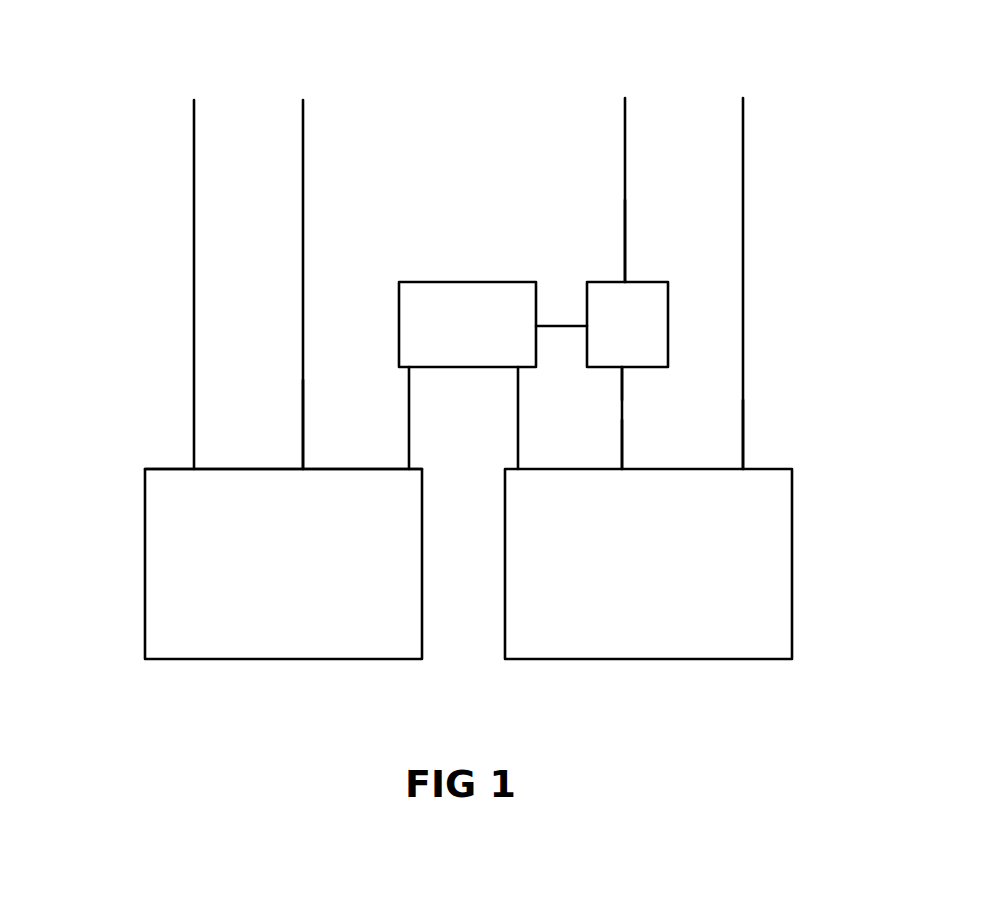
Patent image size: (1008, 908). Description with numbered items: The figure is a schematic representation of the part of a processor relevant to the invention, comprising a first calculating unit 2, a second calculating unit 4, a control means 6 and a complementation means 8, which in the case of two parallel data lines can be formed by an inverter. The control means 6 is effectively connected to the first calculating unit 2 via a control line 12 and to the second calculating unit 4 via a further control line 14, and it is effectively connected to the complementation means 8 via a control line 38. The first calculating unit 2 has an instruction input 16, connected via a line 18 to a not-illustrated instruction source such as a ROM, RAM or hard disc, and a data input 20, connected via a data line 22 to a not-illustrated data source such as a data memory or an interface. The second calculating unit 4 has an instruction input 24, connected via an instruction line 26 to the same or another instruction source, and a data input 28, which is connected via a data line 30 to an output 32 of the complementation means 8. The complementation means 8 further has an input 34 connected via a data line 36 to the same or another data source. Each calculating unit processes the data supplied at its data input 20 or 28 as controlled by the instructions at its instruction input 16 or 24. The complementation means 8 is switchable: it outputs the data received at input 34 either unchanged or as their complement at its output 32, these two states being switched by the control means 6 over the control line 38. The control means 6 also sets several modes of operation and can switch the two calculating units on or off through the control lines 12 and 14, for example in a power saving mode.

The first calculating unit 2 is at (312, 643).
The second calculating unit 4 is at (663, 637).
The control means 6 is at (417, 297).
The complementation means 8 is at (645, 297).
The control line 12 is at (409, 417).
The control line 14 is at (518, 437).
The instruction input 16 is at (192, 469).
The line 18 is at (194, 242).
The data input 20 is at (302, 467).
The data line 22 is at (303, 309).
The instruction input 24 is at (743, 463).
The instruction line 26 is at (745, 306).
The data input 28 is at (625, 464).
The data line 30 is at (622, 400).
The output 32 is at (622, 362).
The input 34 is at (626, 282).
The data line 36 is at (626, 113).
The control line 38 is at (557, 325).